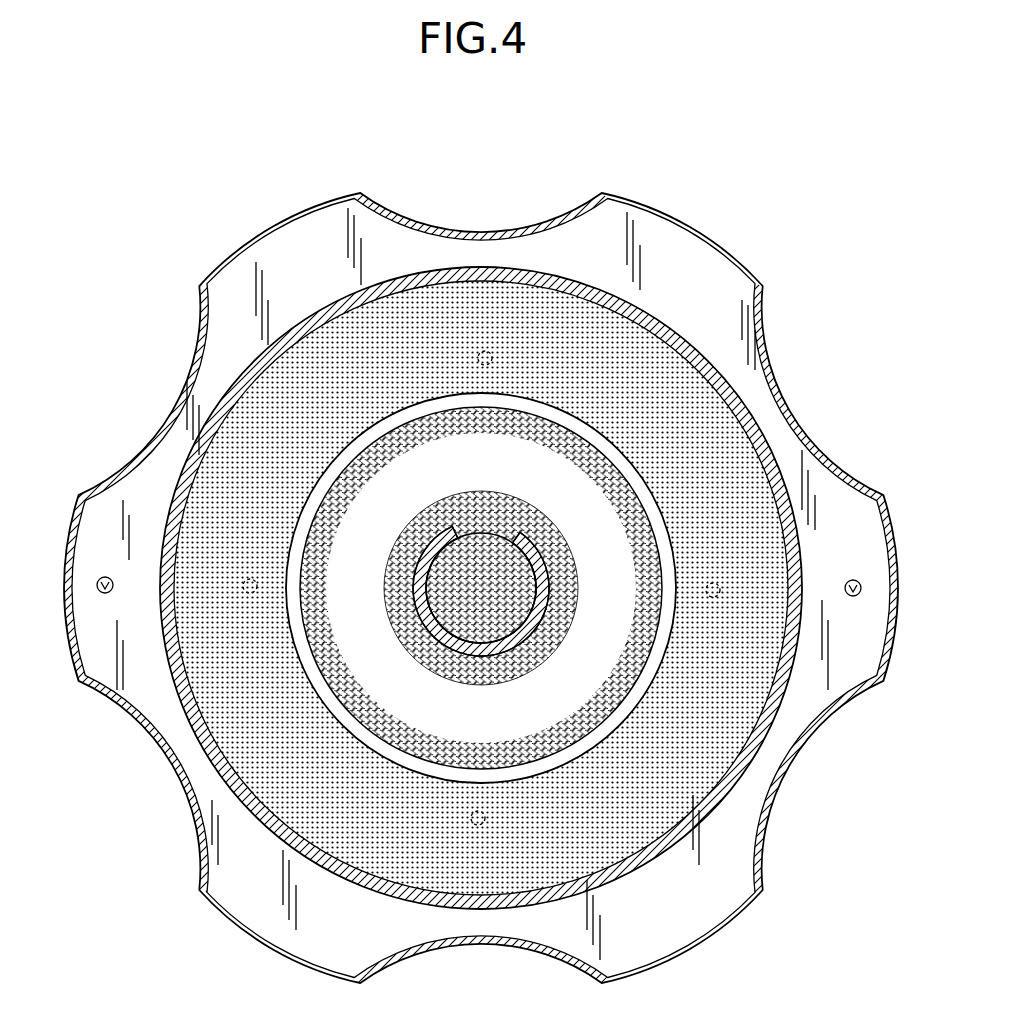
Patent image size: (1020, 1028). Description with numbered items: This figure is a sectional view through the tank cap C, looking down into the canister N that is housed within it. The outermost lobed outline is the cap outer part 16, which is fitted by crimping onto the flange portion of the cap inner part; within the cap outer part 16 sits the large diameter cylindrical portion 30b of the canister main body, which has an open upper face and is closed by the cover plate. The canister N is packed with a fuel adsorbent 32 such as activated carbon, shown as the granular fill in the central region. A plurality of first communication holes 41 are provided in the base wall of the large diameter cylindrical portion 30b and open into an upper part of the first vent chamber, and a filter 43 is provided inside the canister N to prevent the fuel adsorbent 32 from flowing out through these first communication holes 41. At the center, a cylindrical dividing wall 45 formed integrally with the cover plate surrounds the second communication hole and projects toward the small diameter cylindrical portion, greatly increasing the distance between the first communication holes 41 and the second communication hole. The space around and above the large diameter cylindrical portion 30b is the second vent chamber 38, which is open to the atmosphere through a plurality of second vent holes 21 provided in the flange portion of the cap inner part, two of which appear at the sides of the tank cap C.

The cap outer part 16 is at (622, 203).
The second vent holes 21 is at (103, 578).
The large diameter cylindrical portion 30b is at (783, 490).
The fuel adsorbent 32 is at (507, 547).
The second vent chamber 38 is at (795, 722).
The first communication holes 41 is at (497, 353).
The filter 43 is at (653, 377).
The cylindrical dividing wall 45 is at (477, 530).
The tank cap C is at (437, 226).
The canister N is at (771, 438).